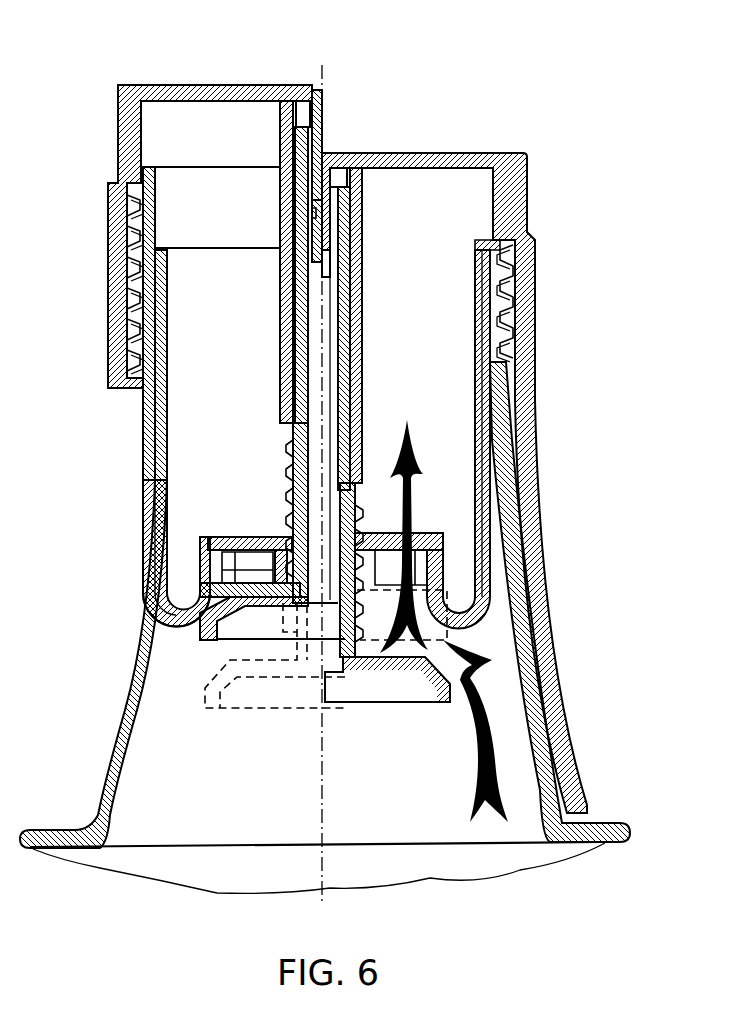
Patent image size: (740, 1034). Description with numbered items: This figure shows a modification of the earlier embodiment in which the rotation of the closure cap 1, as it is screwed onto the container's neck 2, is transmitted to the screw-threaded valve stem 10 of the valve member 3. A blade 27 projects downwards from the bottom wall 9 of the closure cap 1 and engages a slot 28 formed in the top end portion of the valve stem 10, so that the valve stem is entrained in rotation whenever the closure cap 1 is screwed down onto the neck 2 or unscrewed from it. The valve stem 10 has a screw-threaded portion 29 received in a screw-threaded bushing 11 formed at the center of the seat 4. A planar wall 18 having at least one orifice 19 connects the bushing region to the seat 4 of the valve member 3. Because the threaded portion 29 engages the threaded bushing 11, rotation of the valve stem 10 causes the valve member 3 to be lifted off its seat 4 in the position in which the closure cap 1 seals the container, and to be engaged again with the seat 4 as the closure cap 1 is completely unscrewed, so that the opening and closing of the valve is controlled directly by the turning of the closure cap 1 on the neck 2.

The closure cap 1 is at (528, 402).
The neck 2 is at (147, 478).
The valve member 3 is at (200, 632).
The seat 4 is at (162, 613).
The bottom wall 9 is at (176, 85).
The valve stem 10 is at (363, 393).
The screw-threaded bushing 11 is at (200, 563).
The planar wall 18 is at (247, 537).
The orifice 19 is at (420, 538).
The blade 27 is at (325, 102).
The slot 28 is at (316, 203).
The screw-threaded portion 29 is at (286, 533).